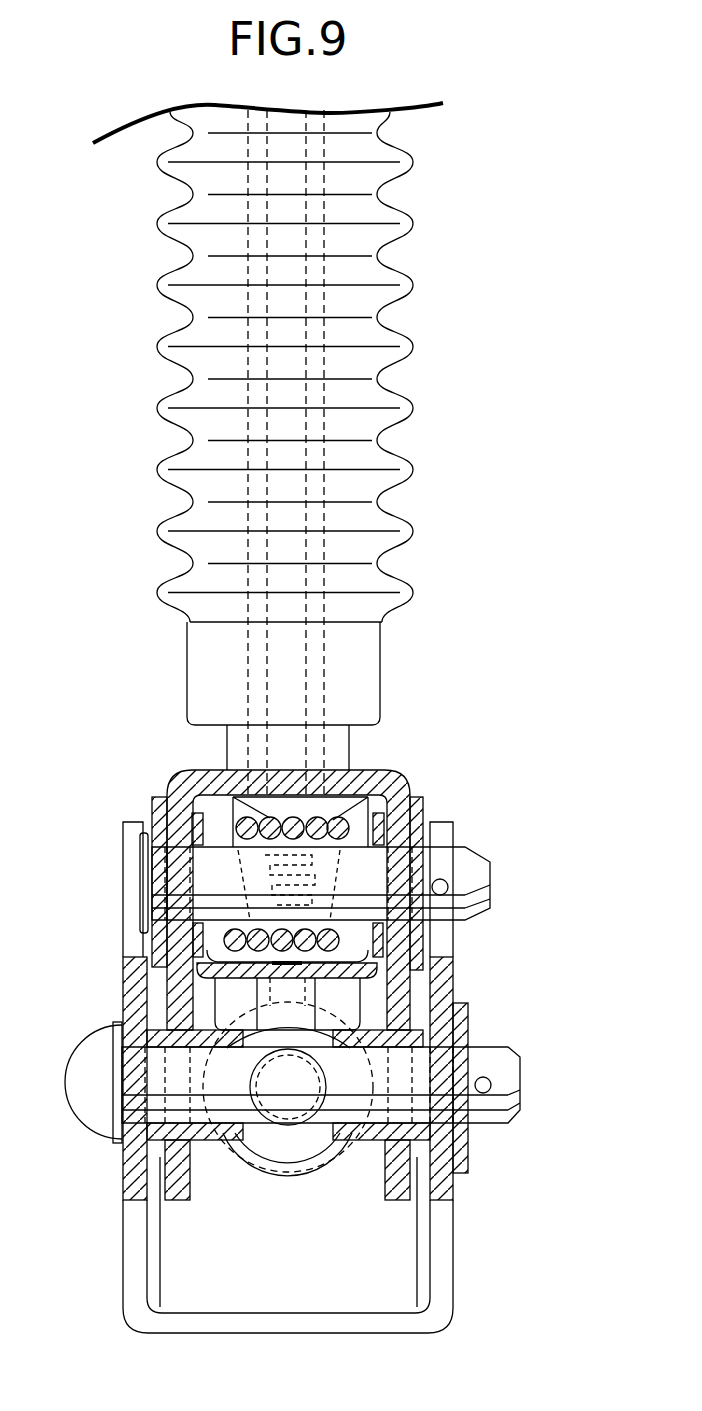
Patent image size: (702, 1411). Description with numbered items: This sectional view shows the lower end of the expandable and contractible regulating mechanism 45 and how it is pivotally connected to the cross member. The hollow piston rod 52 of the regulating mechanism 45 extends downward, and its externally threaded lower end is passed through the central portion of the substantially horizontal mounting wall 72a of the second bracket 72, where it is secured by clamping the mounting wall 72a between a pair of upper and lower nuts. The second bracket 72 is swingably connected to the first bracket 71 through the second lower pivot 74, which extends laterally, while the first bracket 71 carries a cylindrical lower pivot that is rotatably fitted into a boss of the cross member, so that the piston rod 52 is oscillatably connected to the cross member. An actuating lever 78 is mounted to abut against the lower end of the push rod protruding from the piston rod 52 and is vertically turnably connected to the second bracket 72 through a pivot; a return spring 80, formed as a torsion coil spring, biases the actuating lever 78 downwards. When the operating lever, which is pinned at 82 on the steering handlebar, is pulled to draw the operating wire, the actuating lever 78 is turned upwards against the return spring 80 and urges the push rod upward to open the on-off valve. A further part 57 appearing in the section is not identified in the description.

The expandable and contractible regulating mechanism 45 is at (408, 260).
The piston rod 52 is at (325, 663).
The stem 57 is at (307, 713).
The mounting wall 72a is at (342, 771).
The return spring 80 is at (355, 812).
The pin 82 is at (477, 877).
The actuating lever 78 is at (385, 940).
The second bracket 72 is at (397, 995).
The second lower pivot 74 is at (515, 1075).
The first bracket 71 is at (443, 1192).